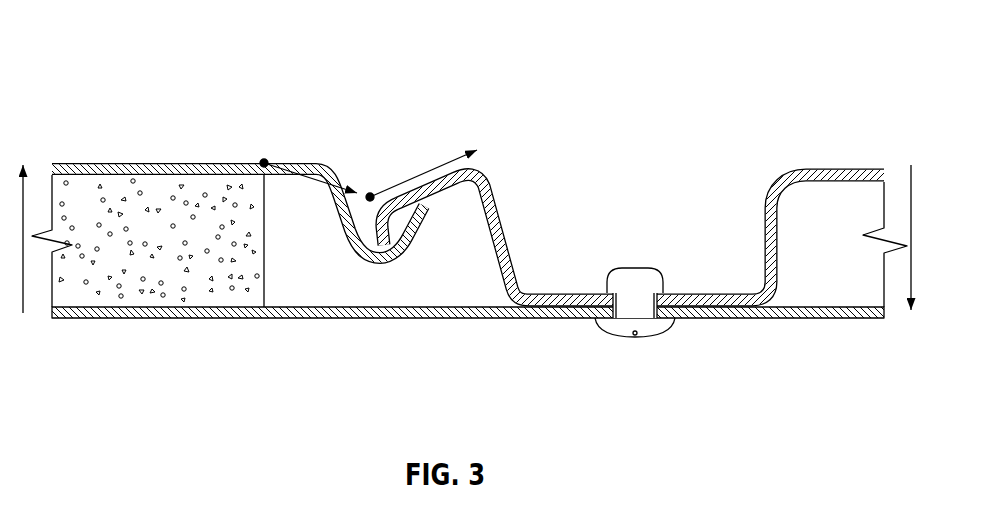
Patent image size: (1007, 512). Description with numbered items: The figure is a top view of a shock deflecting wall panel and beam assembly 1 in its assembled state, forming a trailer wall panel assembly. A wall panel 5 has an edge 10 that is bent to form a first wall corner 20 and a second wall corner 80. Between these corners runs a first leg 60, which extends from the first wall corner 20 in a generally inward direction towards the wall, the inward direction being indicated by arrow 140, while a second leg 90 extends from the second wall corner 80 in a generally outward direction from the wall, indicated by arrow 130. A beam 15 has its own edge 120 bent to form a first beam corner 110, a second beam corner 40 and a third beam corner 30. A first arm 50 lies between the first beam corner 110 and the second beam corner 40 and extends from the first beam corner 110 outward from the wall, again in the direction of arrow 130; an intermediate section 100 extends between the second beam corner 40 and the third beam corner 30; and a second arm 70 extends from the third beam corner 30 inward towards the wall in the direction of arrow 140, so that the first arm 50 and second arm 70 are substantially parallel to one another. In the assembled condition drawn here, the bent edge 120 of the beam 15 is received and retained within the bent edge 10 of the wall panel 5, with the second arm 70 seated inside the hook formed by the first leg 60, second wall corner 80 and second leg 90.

The panel assembly 1 is at (72, 42).
The wall panel 5 is at (147, 158).
The edge 10 is at (197, 163).
The beam 15 is at (825, 160).
The first wall corner 20 is at (327, 163).
The third beam corner 30 is at (370, 195).
The second beam corner 40 is at (482, 171).
The first arm 50 is at (507, 222).
The first leg 60 is at (338, 212).
The second arm 70 is at (358, 238).
The second wall corner 80 is at (381, 265).
The second leg 90 is at (418, 233).
The intermediate section 100 is at (443, 190).
The first beam corner 110 is at (528, 311).
The edge 120 is at (700, 316).
The arrow 130 is at (25, 190).
The arrow 140 is at (907, 288).